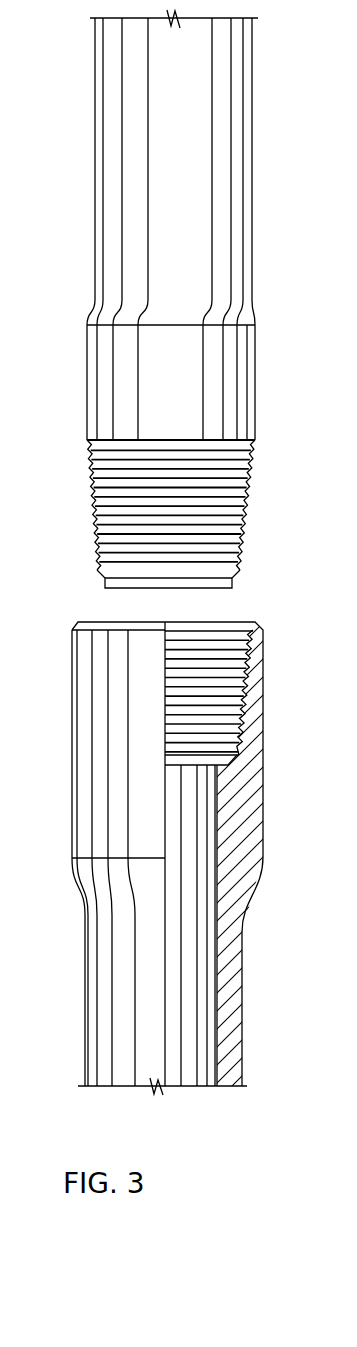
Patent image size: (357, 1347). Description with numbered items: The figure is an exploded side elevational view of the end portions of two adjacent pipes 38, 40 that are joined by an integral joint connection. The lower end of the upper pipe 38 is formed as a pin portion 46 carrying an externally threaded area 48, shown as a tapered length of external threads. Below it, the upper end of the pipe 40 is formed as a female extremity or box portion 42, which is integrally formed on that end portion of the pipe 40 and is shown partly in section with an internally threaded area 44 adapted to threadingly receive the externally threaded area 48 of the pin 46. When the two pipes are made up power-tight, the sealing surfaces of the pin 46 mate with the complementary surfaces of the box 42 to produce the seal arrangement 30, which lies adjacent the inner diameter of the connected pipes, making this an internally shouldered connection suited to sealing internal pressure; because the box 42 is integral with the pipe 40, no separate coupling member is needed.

The pipe 38 is at (224, 88).
The pin portion 46 is at (82, 493).
The externally threaded area 48 is at (250, 472).
The seal arrangement 30 is at (244, 577).
The box portion 42 is at (271, 644).
The internally threaded area 44 is at (245, 695).
The pipe 40 is at (120, 1018).